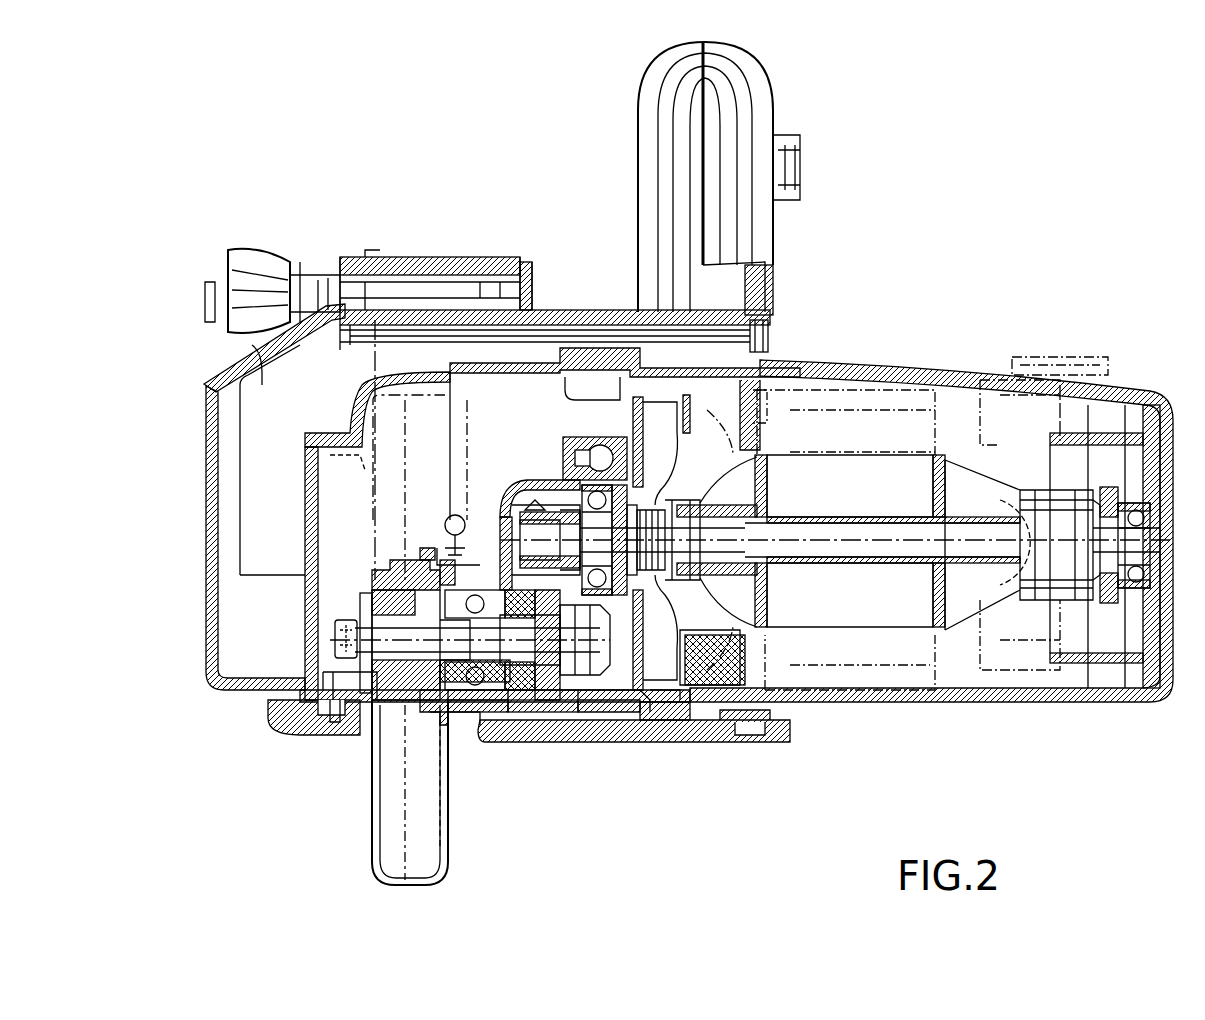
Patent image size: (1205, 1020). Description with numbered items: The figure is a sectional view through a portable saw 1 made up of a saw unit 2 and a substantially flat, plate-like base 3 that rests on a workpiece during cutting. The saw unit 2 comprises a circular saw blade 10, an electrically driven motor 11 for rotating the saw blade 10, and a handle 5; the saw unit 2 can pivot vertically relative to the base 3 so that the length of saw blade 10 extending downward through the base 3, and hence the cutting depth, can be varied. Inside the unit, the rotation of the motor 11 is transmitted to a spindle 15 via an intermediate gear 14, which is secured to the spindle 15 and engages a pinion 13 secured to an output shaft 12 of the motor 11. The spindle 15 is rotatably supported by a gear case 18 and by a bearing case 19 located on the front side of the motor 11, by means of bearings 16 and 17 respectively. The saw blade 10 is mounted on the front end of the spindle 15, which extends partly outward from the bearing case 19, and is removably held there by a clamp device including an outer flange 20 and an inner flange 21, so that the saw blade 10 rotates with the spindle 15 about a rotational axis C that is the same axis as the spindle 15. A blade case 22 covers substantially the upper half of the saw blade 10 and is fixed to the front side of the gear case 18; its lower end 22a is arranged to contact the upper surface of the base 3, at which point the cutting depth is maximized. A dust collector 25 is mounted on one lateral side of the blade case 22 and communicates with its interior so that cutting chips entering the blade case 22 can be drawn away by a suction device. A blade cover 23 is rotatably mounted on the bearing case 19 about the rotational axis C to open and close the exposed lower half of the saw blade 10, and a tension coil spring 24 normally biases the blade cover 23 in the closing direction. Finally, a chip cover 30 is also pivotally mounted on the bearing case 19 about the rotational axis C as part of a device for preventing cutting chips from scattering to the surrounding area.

The portable saw 1 is at (872, 180).
The saw unit 2 is at (578, 305).
The base 3 is at (707, 747).
The handle 5 is at (745, 112).
The circular saw blade 10 is at (407, 773).
The motor 11 is at (880, 370).
The output shaft 12 is at (590, 480).
The pinion 13 is at (540, 560).
The intermediate gear 14 is at (572, 737).
The spindle 15 is at (537, 737).
The bearing 16 is at (483, 737).
The bearing 17 is at (637, 738).
The gear case 18 is at (480, 565).
The bearing case 19 is at (452, 545).
The outer flange 20 is at (308, 547).
The inner flange 21 is at (375, 592).
The blade case 22 is at (360, 573).
The lower end 22a is at (305, 726).
The blade cover 23 is at (378, 860).
The tension coil spring 24 is at (268, 303).
The dust collector 25 is at (265, 368).
The chip cover 30 is at (420, 548).
The rotational axis C is at (337, 630).